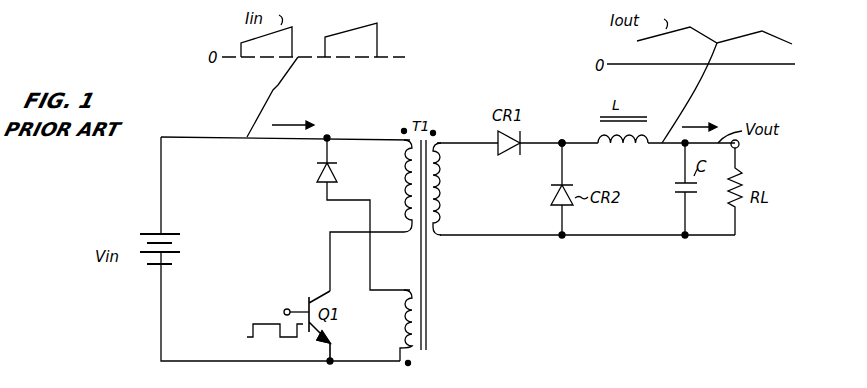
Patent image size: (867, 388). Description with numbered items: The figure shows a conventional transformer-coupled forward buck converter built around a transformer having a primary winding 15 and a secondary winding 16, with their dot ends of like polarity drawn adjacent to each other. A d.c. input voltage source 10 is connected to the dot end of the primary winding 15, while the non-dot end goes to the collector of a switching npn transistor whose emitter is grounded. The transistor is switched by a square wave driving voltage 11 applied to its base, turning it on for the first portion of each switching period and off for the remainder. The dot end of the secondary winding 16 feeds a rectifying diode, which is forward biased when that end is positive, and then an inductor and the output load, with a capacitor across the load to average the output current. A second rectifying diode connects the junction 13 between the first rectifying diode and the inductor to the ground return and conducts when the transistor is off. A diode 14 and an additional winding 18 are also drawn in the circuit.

The d.c. input voltage source 10 is at (175, 233).
The square wave driving voltage 11 is at (265, 317).
The junction 13 is at (562, 141).
The clamp diode 14 is at (315, 180).
The primary winding 15 is at (402, 173).
The secondary winding 16 is at (447, 190).
The transformer auxiliary winding 18 is at (388, 325).